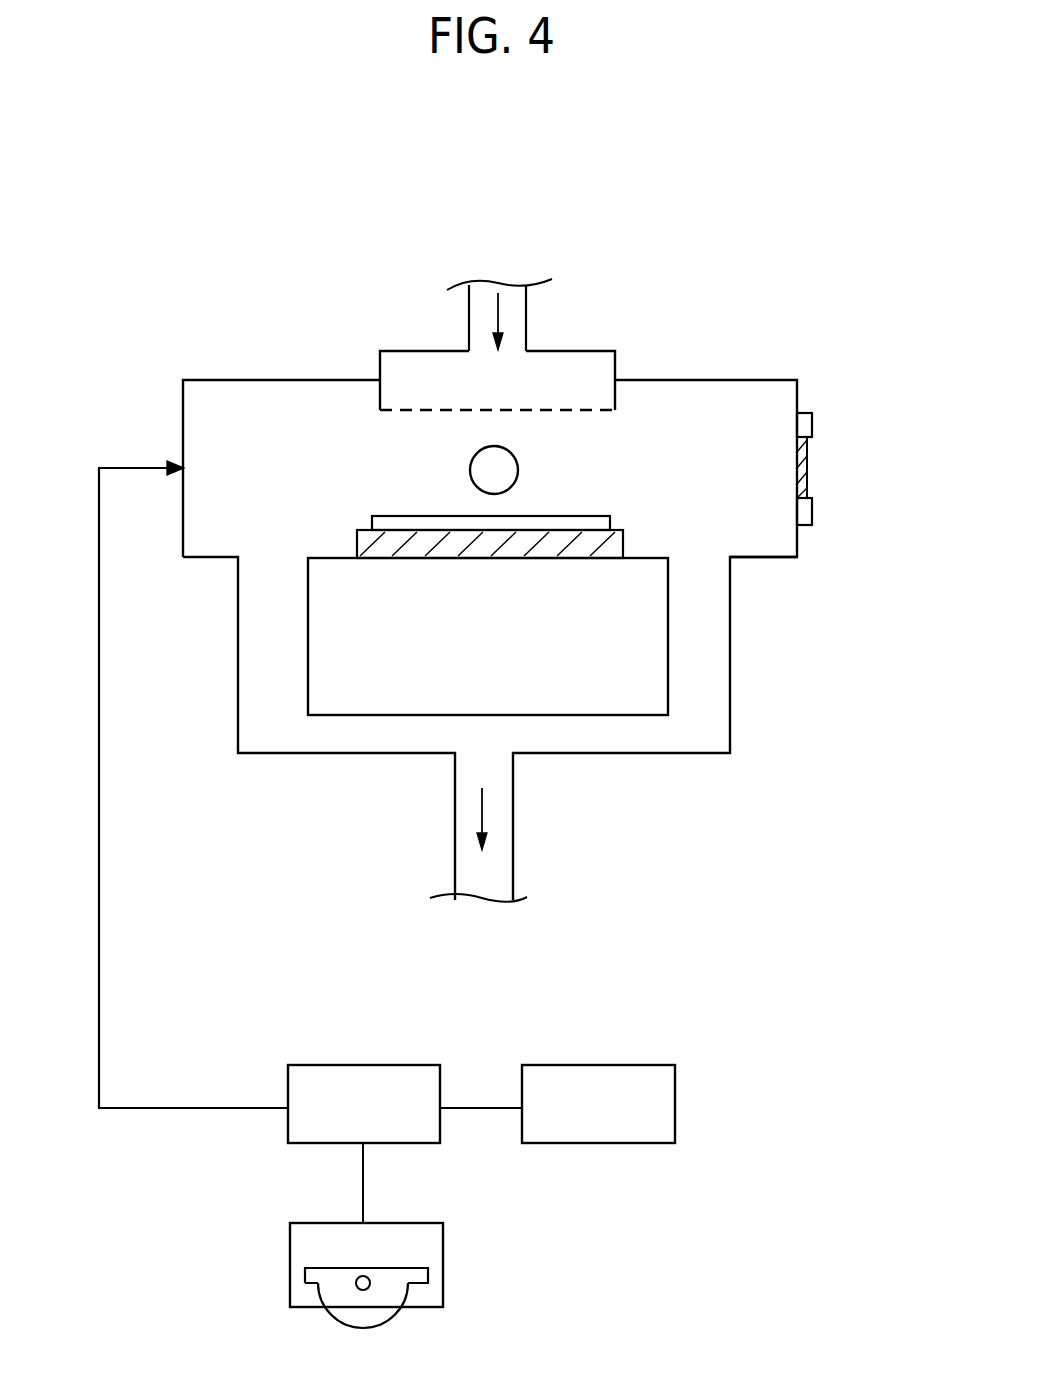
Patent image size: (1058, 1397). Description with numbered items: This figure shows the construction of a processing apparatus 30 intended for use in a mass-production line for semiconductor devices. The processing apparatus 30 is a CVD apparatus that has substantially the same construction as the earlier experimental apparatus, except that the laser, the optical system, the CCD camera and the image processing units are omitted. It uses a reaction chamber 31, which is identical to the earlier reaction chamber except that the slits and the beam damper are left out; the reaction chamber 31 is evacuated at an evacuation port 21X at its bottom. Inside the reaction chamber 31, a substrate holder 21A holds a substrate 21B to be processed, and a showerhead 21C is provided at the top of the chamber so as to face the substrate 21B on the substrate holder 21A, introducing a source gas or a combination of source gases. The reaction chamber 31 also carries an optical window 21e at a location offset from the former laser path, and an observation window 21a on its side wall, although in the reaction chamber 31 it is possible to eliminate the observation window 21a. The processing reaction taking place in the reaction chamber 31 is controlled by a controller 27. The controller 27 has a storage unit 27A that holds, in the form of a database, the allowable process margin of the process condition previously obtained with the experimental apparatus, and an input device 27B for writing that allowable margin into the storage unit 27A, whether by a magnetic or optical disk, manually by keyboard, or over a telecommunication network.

The processing apparatus 30 is at (517, 236).
The reaction chamber 31 is at (770, 380).
The showerhead 21C is at (603, 352).
The optical window 21e is at (518, 463).
The substrate 21B is at (610, 521).
The substrate holder 21A is at (623, 554).
The observation window 21a is at (808, 463).
The evacuation port 21X is at (238, 607).
The controller 27 is at (408, 1064).
The storage unit 27A is at (652, 1064).
The input device 27B is at (443, 1248).